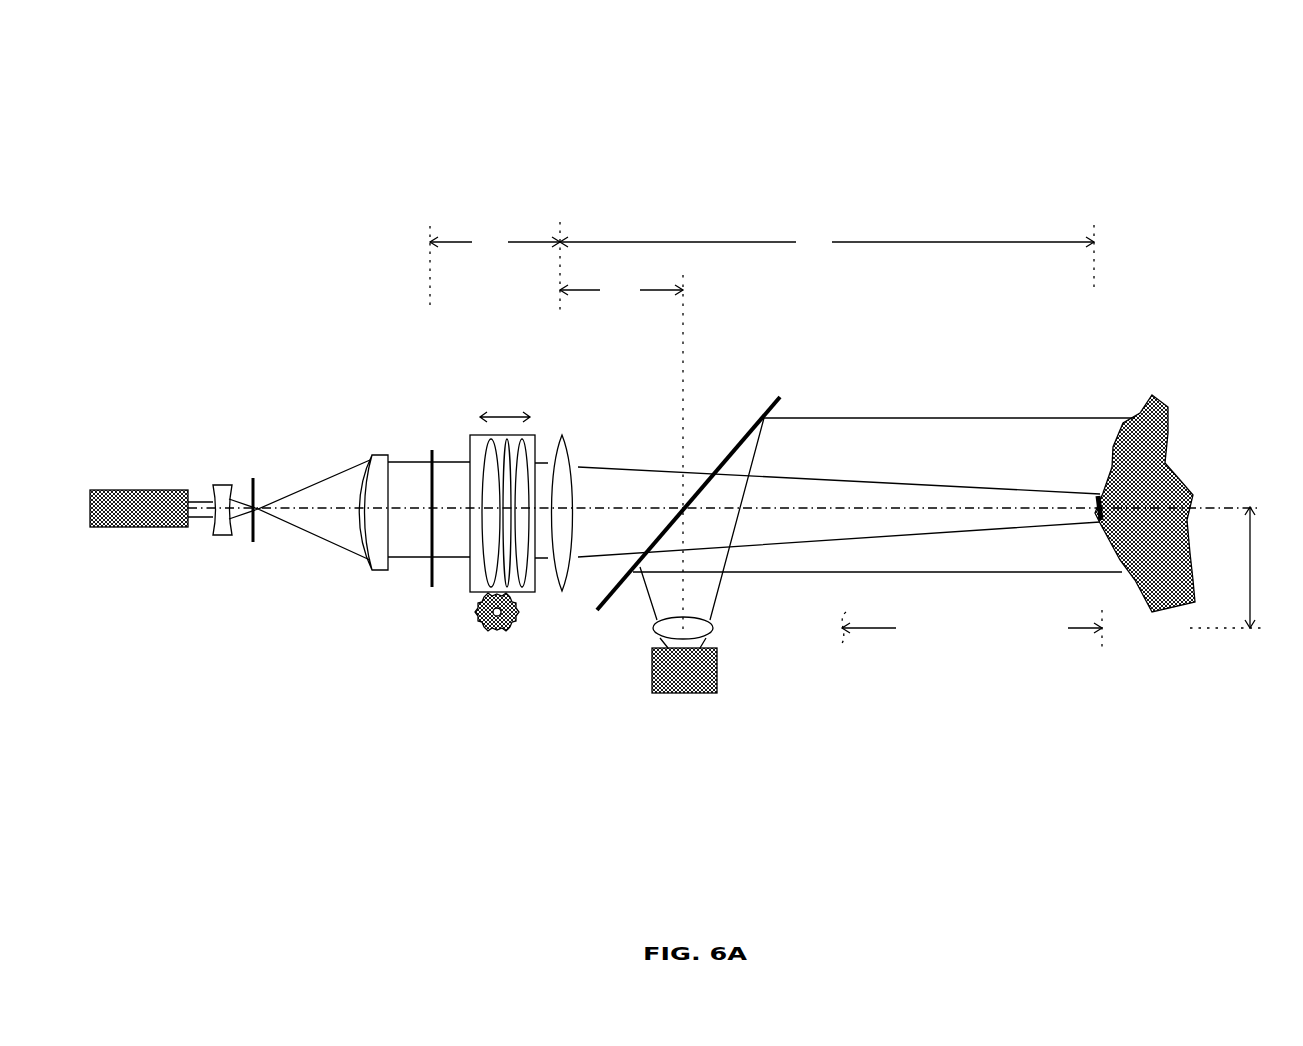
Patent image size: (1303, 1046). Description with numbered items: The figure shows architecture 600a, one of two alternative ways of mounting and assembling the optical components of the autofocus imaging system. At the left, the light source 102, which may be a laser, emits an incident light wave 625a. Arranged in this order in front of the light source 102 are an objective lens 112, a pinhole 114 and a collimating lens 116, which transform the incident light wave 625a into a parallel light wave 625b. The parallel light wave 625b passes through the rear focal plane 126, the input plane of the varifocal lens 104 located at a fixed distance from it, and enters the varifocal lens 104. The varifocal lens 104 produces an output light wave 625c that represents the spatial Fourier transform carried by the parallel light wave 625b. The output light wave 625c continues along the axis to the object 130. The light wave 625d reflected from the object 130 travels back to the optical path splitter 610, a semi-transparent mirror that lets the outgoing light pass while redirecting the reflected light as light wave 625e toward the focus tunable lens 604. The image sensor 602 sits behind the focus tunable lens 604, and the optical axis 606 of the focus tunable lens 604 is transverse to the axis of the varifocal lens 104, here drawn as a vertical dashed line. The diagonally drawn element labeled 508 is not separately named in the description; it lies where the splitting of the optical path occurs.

The architecture 600a is at (190, 83).
The light source 102 is at (148, 497).
The objective lens 112 is at (208, 490).
The pinhole 114 is at (250, 478).
The collimating lens 116 is at (363, 447).
The rear focal plane 126 is at (432, 450).
The varifocal lens 104 is at (562, 435).
The beam splitter 508 is at (628, 508).
The optical axis of the focus tunable lens 606 is at (685, 313).
The optical path splitter 610 is at (745, 425).
The object 130 is at (1177, 457).
The focus tunable lens 604 is at (673, 632).
The image sensor 602 is at (680, 694).
The incident light wave 625a is at (200, 523).
The parallel light wave 625b is at (398, 462).
The output light wave 625c is at (602, 467).
The reflected light wave 625d is at (970, 418).
The redirected light wave 625e is at (720, 588).